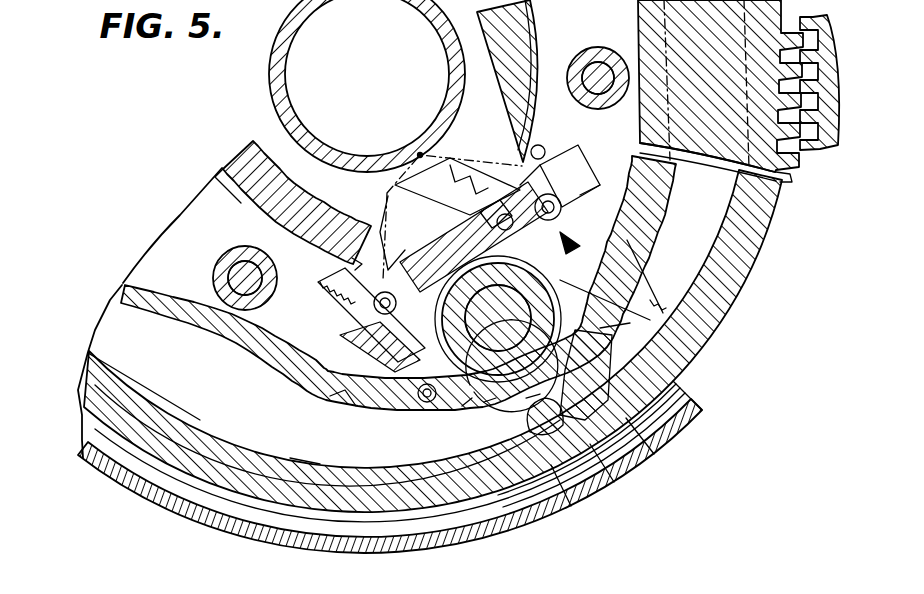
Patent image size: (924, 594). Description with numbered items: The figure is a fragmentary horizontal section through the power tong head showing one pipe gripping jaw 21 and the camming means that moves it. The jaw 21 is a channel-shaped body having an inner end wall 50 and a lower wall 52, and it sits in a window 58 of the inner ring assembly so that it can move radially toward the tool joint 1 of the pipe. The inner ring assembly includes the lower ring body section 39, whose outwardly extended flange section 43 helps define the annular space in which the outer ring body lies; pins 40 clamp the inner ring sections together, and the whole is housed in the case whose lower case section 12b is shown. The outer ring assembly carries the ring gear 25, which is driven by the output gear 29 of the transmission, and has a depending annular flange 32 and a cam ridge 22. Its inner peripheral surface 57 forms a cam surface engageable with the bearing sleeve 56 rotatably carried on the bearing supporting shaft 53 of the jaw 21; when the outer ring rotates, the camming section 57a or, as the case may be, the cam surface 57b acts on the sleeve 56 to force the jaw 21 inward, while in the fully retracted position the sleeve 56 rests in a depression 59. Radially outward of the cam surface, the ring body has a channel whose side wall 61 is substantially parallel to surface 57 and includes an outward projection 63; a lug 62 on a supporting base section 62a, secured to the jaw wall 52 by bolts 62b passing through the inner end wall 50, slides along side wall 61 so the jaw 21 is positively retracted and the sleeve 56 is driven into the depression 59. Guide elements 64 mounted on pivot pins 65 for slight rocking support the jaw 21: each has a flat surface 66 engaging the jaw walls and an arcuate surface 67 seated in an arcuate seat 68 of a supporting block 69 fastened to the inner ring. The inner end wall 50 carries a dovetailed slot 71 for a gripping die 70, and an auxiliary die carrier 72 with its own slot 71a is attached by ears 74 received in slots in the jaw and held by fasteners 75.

The tool joint 1 is at (285, 62).
The lower case section 12b is at (300, 542).
The pipe gripping jaws 21 is at (524, 186).
The cam ridge 22 is at (266, 362).
The ring gear 25 is at (794, 179).
The output gear 29 is at (820, 62).
The annular flange 32 is at (118, 388).
The lower ring body section 39 is at (222, 172).
The pins 40 is at (597, 72).
The flange section 43 is at (713, 213).
The inner end wall 50 is at (592, 190).
The lower wall 52 is at (488, 400).
The bearing supporting shaft 53 is at (498, 319).
The bearing sleeve 56 is at (672, 380).
The inner peripheral surface 57 is at (650, 172).
The camming section 57a is at (660, 190).
The cam surface 57b is at (310, 425).
The windows 58 is at (352, 259).
The depressions 59 is at (466, 408).
The side wall 61 is at (668, 100).
The lug 62 is at (598, 460).
The supporting base section 62a is at (650, 440).
The bolts 62b is at (686, 412).
The outward projection 63 is at (530, 398).
The guide elements 64 is at (418, 350).
The pivot pins 65 is at (385, 330).
The flat surface 66 is at (578, 246).
The arcuate surface 67 is at (580, 195).
The arcuate seat 68 is at (630, 323).
The supporting block 69 is at (368, 308).
The dies 70 is at (458, 154).
The dovetailed slot 71 is at (447, 238).
The slot 71a is at (481, 210).
The auxiliary die carriers 72 is at (410, 190).
The ears 74 is at (326, 291).
The fasteners 75 is at (470, 190).